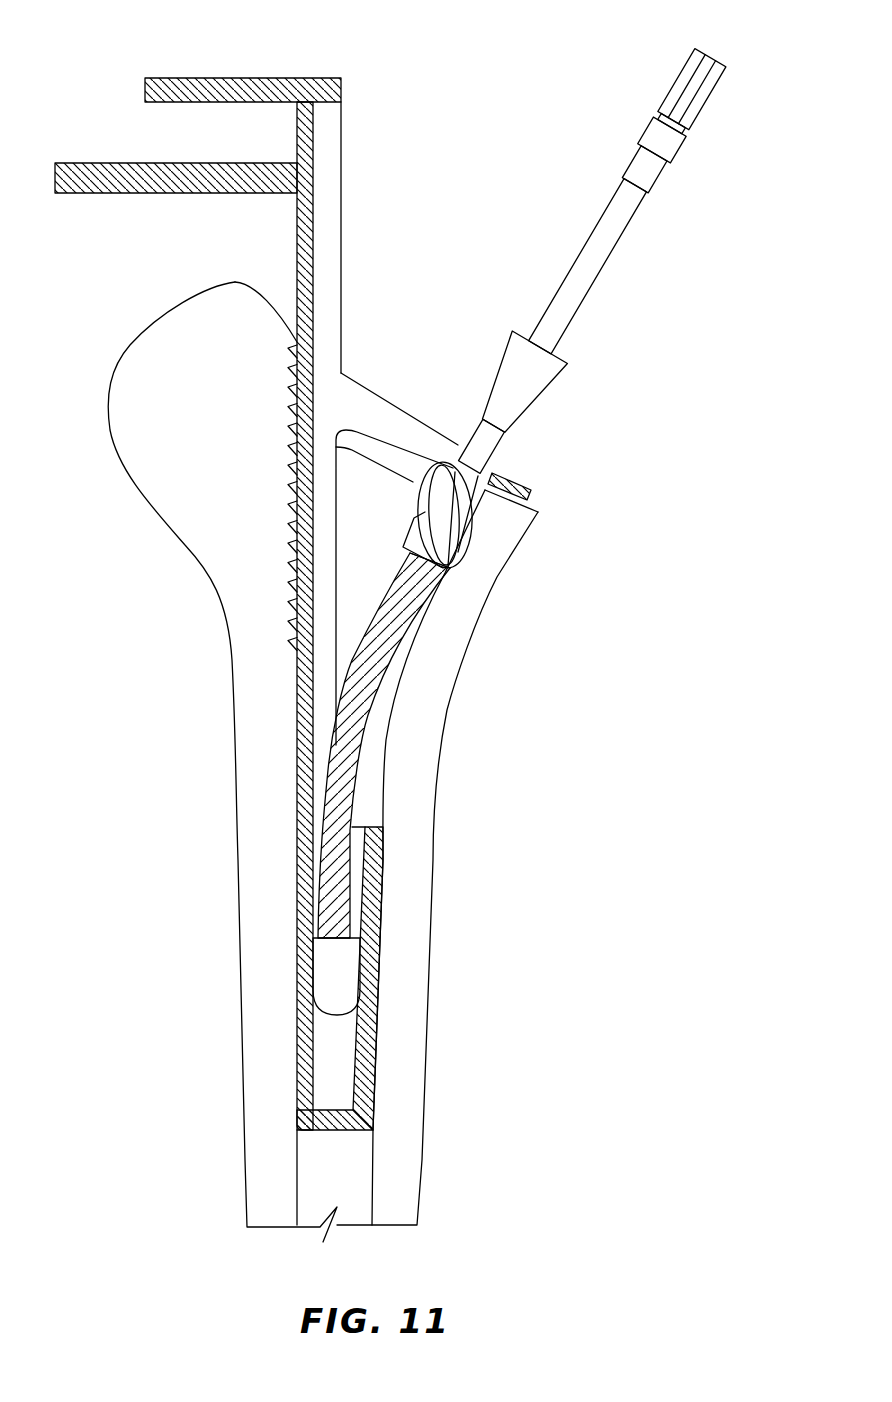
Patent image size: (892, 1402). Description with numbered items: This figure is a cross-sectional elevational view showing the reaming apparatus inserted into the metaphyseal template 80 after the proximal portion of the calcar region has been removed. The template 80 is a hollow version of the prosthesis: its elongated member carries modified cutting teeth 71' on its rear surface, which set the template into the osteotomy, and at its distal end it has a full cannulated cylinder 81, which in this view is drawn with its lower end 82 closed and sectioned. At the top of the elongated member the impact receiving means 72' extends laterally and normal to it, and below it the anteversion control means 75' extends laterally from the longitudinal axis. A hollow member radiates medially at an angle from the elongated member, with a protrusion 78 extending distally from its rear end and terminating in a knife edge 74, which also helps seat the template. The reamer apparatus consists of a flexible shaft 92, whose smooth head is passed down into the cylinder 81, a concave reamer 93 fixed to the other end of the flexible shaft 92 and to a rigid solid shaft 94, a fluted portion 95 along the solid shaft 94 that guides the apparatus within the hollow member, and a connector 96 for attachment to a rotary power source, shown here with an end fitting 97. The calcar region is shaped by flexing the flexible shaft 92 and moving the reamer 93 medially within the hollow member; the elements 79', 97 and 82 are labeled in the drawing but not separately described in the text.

The impact receiving means 72' is at (243, 54).
The anteversion control means 75' is at (176, 214).
The template 80 is at (376, 236).
The protrusion 78 is at (393, 422).
The teeth 79' is at (259, 498).
The cutting teeth 71' is at (267, 616).
The knife edge 74 is at (402, 470).
The solid shaft 94 is at (486, 436).
The fluted portion 95 is at (543, 380).
The connector 96 is at (592, 268).
The handle cap 97 is at (688, 70).
The concave reamer 93 is at (440, 525).
The flexible shaft 92 is at (345, 792).
The cannulated cylinder 81 is at (343, 1068).
The tube bottom 82 is at (355, 1130).